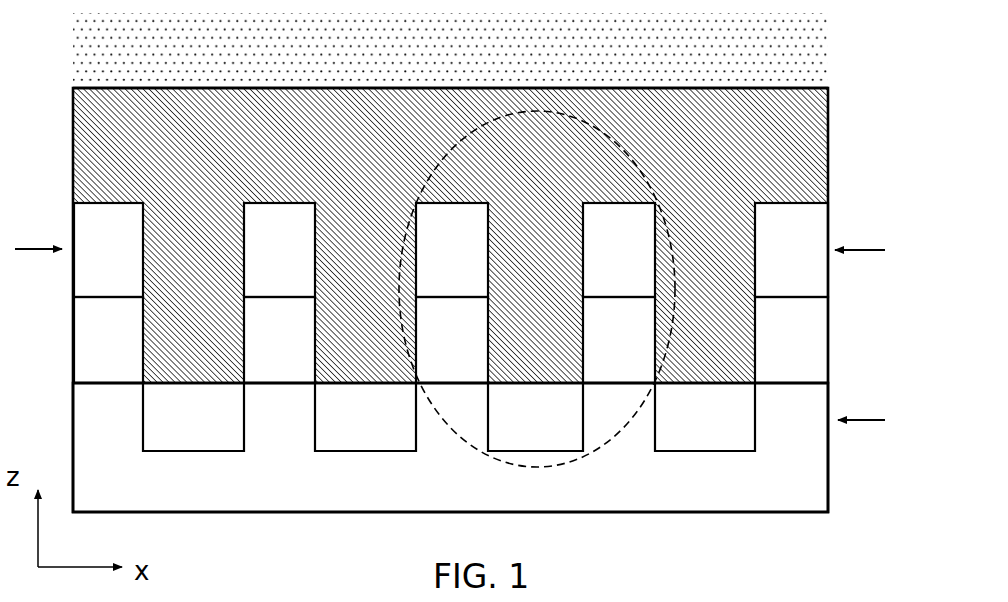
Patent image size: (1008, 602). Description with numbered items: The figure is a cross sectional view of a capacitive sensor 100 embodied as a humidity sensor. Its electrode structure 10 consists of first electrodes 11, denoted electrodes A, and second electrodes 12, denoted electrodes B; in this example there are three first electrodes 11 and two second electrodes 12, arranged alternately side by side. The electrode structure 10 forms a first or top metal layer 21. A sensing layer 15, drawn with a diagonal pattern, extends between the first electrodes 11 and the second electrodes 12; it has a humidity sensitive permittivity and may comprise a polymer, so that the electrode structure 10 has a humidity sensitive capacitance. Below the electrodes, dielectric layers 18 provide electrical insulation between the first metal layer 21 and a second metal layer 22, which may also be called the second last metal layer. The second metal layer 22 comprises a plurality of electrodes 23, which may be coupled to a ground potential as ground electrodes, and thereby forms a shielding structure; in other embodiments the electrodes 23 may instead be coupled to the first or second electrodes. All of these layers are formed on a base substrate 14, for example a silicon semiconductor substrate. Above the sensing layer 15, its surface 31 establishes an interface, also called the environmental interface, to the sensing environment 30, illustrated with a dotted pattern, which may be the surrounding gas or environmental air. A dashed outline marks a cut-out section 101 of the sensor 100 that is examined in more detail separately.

The electrode structure 10 is at (38, 233).
The first electrodes 11 is at (95, 270).
The second electrodes 12 is at (300, 272).
The base substrate 14 is at (805, 461).
The sensing layer 15 is at (812, 153).
The dielectric layers 18 is at (100, 343).
The first metal layer 21 is at (877, 251).
The second metal layer 22 is at (880, 421).
The electrodes 23 is at (333, 432).
The sensing environment 30 is at (795, 60).
The surface 31 is at (197, 88).
The capacitive sensor 100 is at (820, 585).
The cut-out section 101 is at (480, 453).